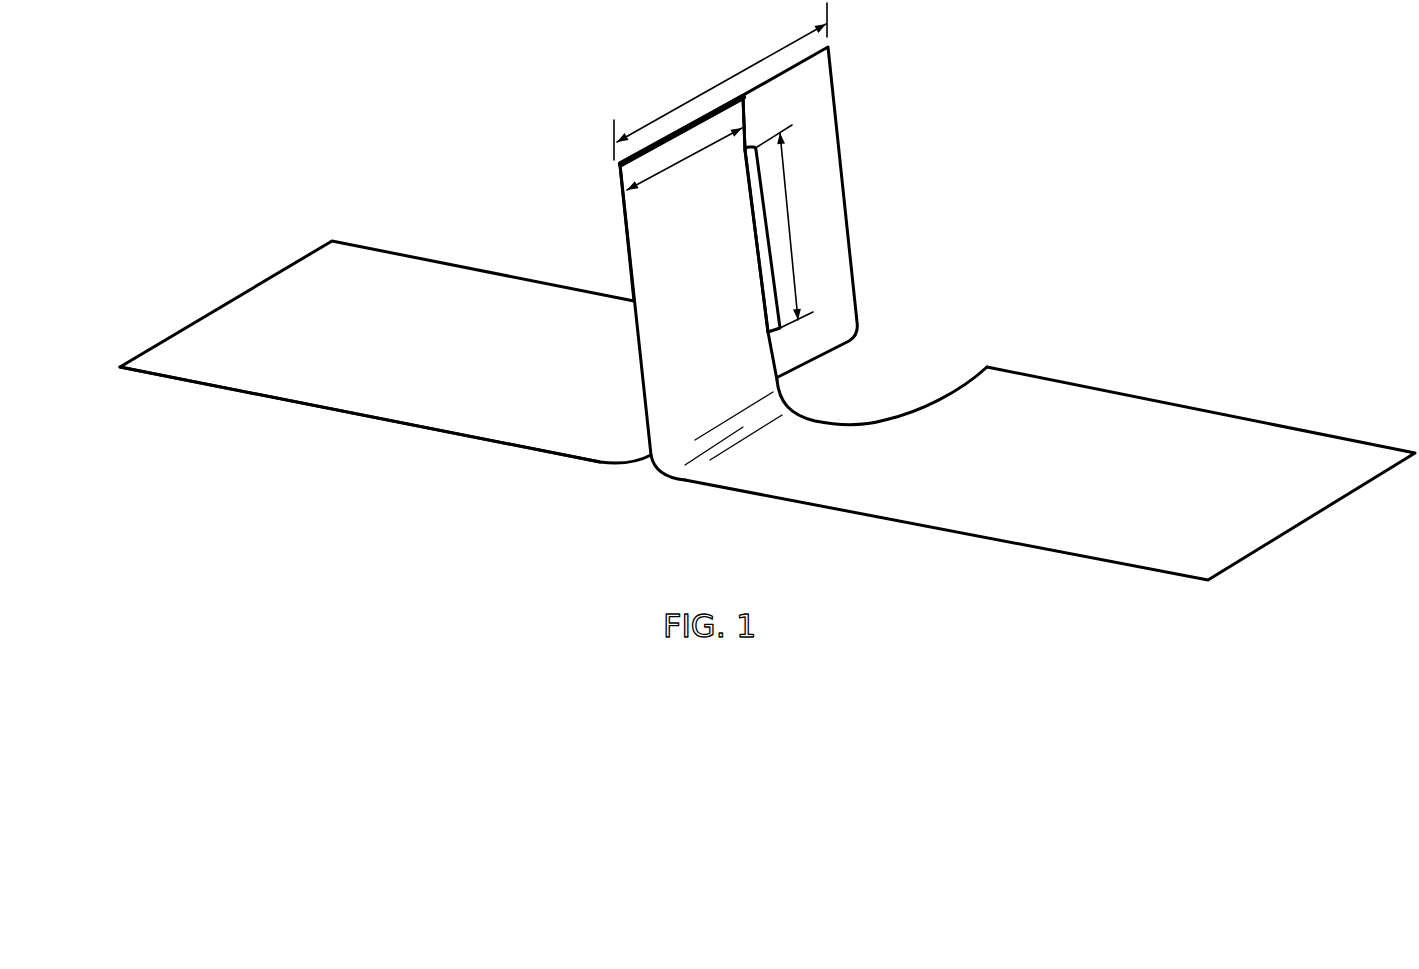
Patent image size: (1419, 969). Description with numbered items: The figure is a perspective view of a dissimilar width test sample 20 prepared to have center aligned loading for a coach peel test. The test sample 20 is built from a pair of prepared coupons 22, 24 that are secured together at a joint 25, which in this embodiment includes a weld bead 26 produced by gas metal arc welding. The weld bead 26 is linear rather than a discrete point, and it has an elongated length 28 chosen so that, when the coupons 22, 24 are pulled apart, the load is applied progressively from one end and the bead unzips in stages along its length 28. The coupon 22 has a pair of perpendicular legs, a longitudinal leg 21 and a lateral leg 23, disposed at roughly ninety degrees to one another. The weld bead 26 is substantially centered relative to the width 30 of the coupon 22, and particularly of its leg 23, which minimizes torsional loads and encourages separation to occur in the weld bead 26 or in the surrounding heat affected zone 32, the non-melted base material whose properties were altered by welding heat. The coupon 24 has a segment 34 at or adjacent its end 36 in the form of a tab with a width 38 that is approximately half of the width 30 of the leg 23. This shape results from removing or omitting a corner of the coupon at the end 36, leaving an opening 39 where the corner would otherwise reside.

The test sample 20 is at (1030, 154).
The longitudinal leg 21 is at (368, 418).
The coupon 22 is at (442, 249).
The lateral leg 23 is at (833, 90).
The coupon 24 is at (1140, 378).
The joint 25 is at (748, 322).
The weld bead 26 is at (762, 275).
The length 28 is at (790, 217).
The width 30 is at (728, 79).
The heat affected zone 32 is at (738, 251).
The segment 34 is at (713, 328).
The end 36 is at (617, 165).
The width 38 is at (700, 150).
The opening 39 is at (776, 354).